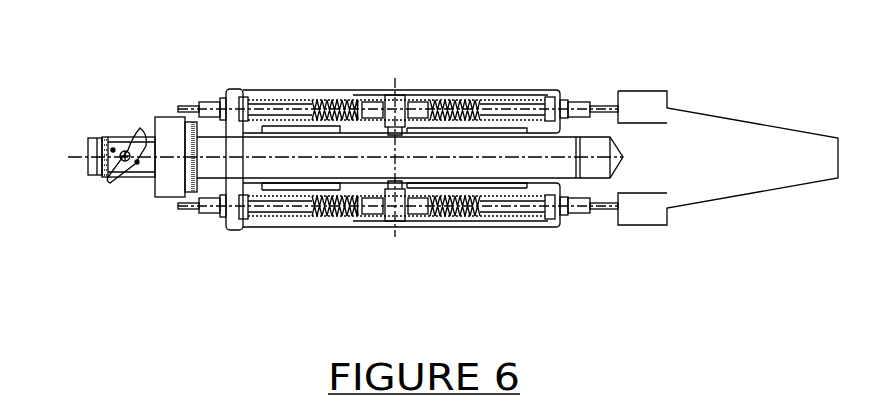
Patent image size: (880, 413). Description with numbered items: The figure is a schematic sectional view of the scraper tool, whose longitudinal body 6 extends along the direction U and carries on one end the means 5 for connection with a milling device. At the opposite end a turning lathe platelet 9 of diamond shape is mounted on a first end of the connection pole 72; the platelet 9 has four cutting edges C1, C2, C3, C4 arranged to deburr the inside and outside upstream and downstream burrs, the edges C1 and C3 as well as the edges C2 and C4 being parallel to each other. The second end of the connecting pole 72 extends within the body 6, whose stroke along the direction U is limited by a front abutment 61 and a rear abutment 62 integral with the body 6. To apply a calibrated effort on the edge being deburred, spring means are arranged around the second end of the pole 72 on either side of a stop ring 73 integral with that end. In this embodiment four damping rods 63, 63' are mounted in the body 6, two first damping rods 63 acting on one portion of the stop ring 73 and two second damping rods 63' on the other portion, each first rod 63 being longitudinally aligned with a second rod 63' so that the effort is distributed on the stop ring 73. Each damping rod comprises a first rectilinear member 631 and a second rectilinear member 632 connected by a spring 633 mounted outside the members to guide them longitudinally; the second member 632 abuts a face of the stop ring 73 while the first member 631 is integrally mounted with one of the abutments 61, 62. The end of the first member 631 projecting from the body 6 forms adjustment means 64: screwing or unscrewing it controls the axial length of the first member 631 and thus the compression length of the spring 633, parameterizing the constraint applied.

The means for connection 5 is at (701, 112).
The body 6 is at (442, 254).
The platelet 9 is at (92, 180).
The front abutment 61 is at (238, 88).
The rear abutment 62 is at (552, 230).
The first damping rod 63 is at (396, 175).
The second damping rod 63' is at (487, 172).
The first rectilinear member 631 is at (269, 226).
The second rectilinear member 632 is at (371, 226).
The spring 633 is at (325, 226).
The adjustment means 64 is at (207, 98).
The connection pole 72 is at (565, 99).
The stop ring 73 is at (382, 95).
The cutting edge C1 is at (123, 137).
The cutting edge C2 is at (147, 140).
The cutting edge C3 is at (127, 178).
The cutting edge C4 is at (102, 180).